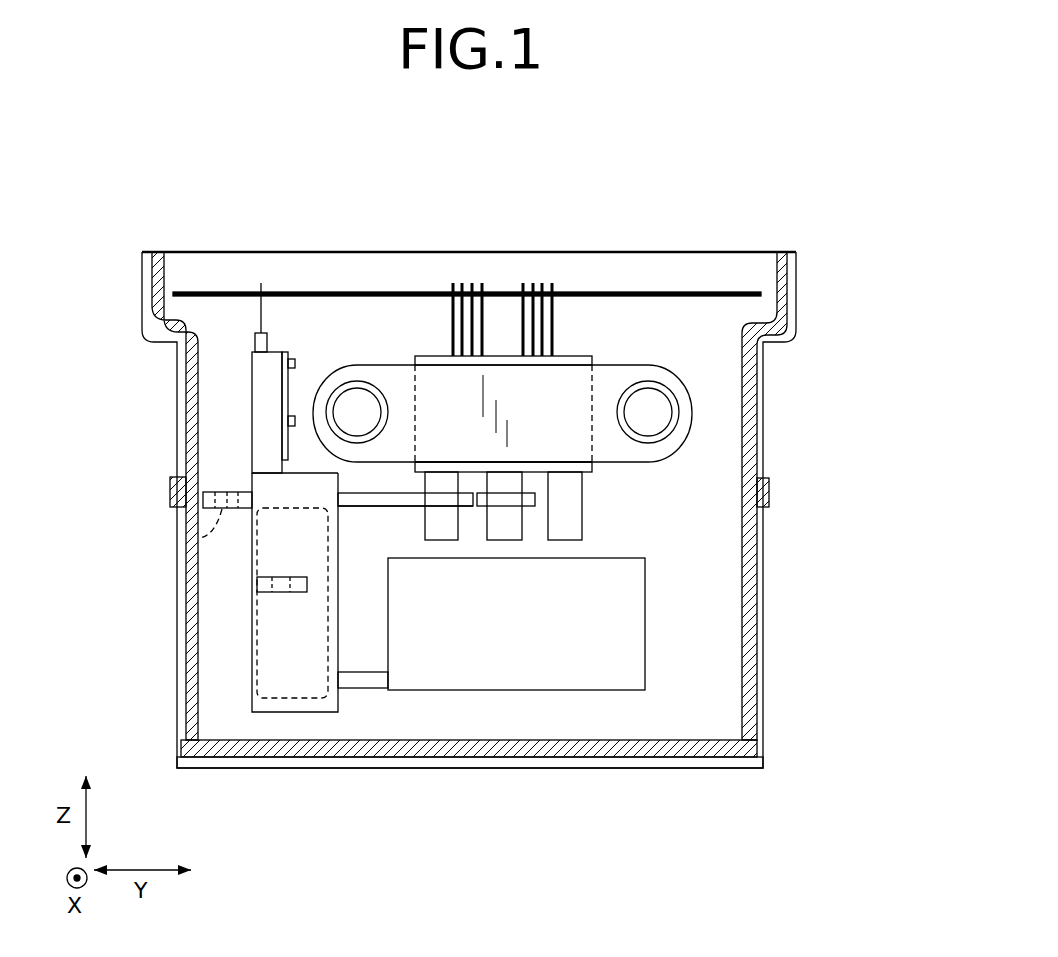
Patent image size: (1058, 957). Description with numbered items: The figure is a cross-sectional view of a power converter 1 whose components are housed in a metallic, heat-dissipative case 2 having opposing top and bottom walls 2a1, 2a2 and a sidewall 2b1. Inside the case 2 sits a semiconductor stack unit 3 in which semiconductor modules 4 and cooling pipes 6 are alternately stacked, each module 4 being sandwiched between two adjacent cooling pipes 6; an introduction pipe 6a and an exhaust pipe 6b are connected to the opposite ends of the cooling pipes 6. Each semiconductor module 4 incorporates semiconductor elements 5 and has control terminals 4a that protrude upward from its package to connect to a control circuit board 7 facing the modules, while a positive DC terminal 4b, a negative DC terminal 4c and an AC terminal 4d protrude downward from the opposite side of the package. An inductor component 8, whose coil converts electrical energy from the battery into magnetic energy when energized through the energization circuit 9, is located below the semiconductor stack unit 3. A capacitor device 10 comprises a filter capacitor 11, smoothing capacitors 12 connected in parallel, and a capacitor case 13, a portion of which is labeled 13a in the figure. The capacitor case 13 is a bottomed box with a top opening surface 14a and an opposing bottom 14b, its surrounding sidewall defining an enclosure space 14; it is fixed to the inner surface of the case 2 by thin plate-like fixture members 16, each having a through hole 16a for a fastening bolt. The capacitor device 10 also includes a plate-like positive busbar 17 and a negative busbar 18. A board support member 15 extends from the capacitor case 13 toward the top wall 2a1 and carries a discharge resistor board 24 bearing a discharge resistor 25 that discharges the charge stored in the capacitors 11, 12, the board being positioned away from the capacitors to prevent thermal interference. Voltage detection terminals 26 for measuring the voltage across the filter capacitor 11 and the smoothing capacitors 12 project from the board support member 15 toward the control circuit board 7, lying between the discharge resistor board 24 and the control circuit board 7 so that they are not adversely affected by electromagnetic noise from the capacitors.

The power converter 1 is at (585, 217).
The case 2 is at (687, 762).
The top wall 2a1 is at (298, 251).
The bottom wall 2a2 is at (245, 760).
The sidewall 2b1 is at (177, 703).
The semiconductor stack unit 3 is at (702, 427).
The semiconductor module 4 is at (417, 353).
The semiconductor elements 5 is at (503, 467).
The control terminals 4a is at (542, 277).
The positive DC terminal 4b is at (445, 530).
The negative DC terminal 4c is at (502, 530).
The AC terminal 4d is at (570, 520).
The cooling pipes 6 is at (613, 363).
The introduction pipe 6a is at (653, 405).
The exhaust pipe 6b is at (362, 397).
The control circuit board 7 is at (723, 283).
The inductor component 8 is at (647, 657).
The energization circuit 9 is at (371, 688).
The capacitor device 10 is at (237, 473).
The filter capacitor 11 is at (191, 603).
The smoothing capacitors 12 is at (250, 667).
The capacitor case 13 is at (250, 703).
The holder top plate 13a is at (300, 473).
The enclosure space 14 is at (410, 669).
The top opening surface 14a is at (405, 499).
The bottom 14b is at (252, 565).
The board support member 15 is at (267, 370).
The fixture members 16 is at (200, 502).
The through hole 16a is at (272, 575).
The positive busbar 17 is at (406, 506).
The negative busbar 18 is at (530, 502).
The discharge resistor board 24 is at (351, 318).
The discharge resistor 25 is at (290, 389).
The voltage detection terminals 26 is at (262, 277).